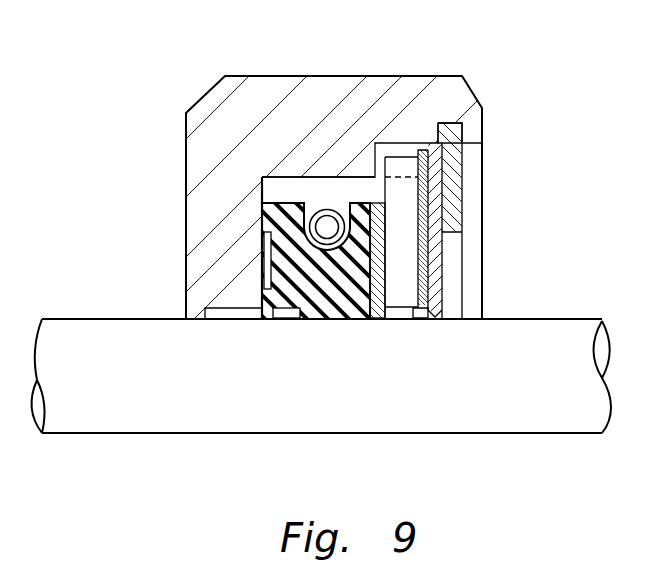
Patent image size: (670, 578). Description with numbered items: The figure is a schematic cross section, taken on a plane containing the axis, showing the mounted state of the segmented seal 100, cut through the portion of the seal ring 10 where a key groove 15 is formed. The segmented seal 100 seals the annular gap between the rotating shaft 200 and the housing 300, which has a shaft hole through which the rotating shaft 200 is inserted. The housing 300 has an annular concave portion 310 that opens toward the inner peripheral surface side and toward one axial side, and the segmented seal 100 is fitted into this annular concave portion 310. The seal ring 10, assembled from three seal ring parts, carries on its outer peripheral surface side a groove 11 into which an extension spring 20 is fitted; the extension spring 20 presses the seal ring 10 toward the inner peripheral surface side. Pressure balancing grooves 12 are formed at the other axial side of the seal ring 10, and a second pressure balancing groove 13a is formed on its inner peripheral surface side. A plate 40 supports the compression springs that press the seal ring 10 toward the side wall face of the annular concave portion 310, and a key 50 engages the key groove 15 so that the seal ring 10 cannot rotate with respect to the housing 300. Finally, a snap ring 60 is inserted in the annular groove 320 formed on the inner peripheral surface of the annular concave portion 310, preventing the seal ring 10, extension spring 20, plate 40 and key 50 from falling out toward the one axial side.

The housing 300 is at (192, 86).
The rotating shaft 200 is at (321, 376).
The segmented seal 100 is at (502, 170).
The seal ring 10 is at (337, 194).
The groove 11 is at (347, 214).
The annular concave portion 310 is at (332, 207).
The extension spring 20 is at (312, 183).
The pressure balancing grooves 12 is at (263, 255).
The second pressure balancing groove 13a is at (284, 311).
The key groove 15 is at (372, 300).
The snap ring 60 is at (450, 202).
The key 50 is at (450, 253).
The plate 40 is at (437, 273).
The annular groove 320 is at (441, 134).